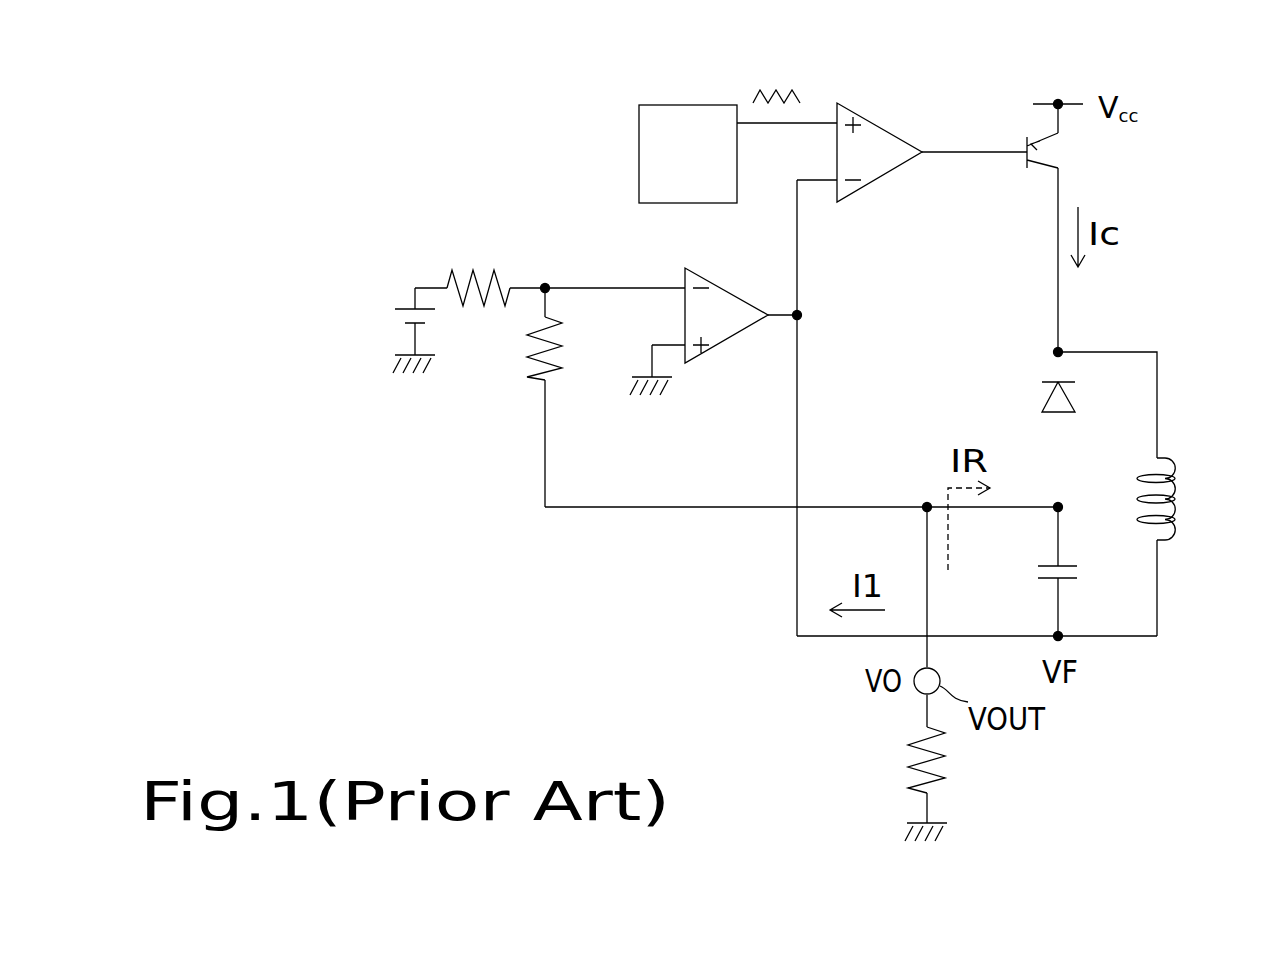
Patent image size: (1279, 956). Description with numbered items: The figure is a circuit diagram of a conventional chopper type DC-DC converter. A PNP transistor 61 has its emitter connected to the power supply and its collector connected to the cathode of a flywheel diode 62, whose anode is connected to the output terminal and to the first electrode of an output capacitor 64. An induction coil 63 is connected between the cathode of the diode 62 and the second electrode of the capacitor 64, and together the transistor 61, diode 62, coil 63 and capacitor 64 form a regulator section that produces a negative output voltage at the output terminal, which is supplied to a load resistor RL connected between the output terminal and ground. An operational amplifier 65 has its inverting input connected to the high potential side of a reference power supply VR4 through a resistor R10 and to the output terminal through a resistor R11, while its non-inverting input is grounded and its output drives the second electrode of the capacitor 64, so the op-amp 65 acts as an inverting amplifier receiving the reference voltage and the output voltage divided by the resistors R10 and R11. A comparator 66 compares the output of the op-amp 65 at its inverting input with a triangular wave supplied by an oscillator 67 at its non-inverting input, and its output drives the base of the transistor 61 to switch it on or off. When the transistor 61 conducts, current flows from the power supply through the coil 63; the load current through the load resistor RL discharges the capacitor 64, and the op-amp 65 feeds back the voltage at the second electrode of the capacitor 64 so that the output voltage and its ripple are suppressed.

The PNP transistor 61 is at (1041, 166).
The flywheel diode 62 is at (1040, 396).
The induction coil 63 is at (1180, 462).
The output capacitor 64 is at (1075, 562).
The operational amplifier 65 is at (720, 287).
The comparator 66 is at (885, 128).
The oscillator 67 is at (689, 104).
The resistor R10 is at (481, 270).
The resistor R11 is at (553, 372).
The load resistor RL is at (945, 760).
The reference power supply VR4 is at (400, 307).